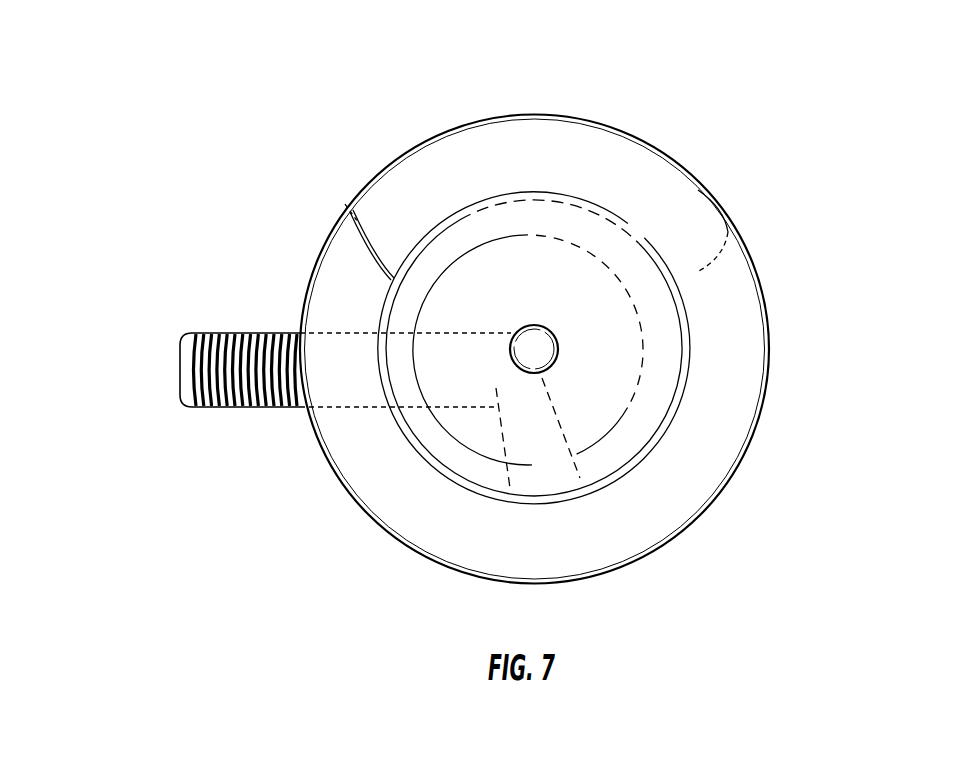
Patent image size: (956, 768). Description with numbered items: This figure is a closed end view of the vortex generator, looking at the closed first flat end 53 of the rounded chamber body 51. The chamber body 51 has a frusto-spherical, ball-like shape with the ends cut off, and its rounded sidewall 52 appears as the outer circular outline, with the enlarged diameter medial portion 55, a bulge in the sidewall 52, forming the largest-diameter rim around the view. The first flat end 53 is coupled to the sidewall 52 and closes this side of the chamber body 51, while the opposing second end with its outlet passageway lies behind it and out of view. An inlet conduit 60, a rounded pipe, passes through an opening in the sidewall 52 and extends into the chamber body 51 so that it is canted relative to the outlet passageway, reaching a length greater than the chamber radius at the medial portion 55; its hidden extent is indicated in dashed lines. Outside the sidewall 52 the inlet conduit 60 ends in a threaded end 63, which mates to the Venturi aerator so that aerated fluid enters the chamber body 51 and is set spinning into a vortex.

The rounded chamber body 51 is at (614, 122).
The sidewall 52 is at (433, 180).
The first flat end 53 is at (652, 344).
The enlarged diameter medial portion 55 is at (508, 117).
The inlet conduit 60 is at (332, 333).
The threaded end 63 is at (193, 408).